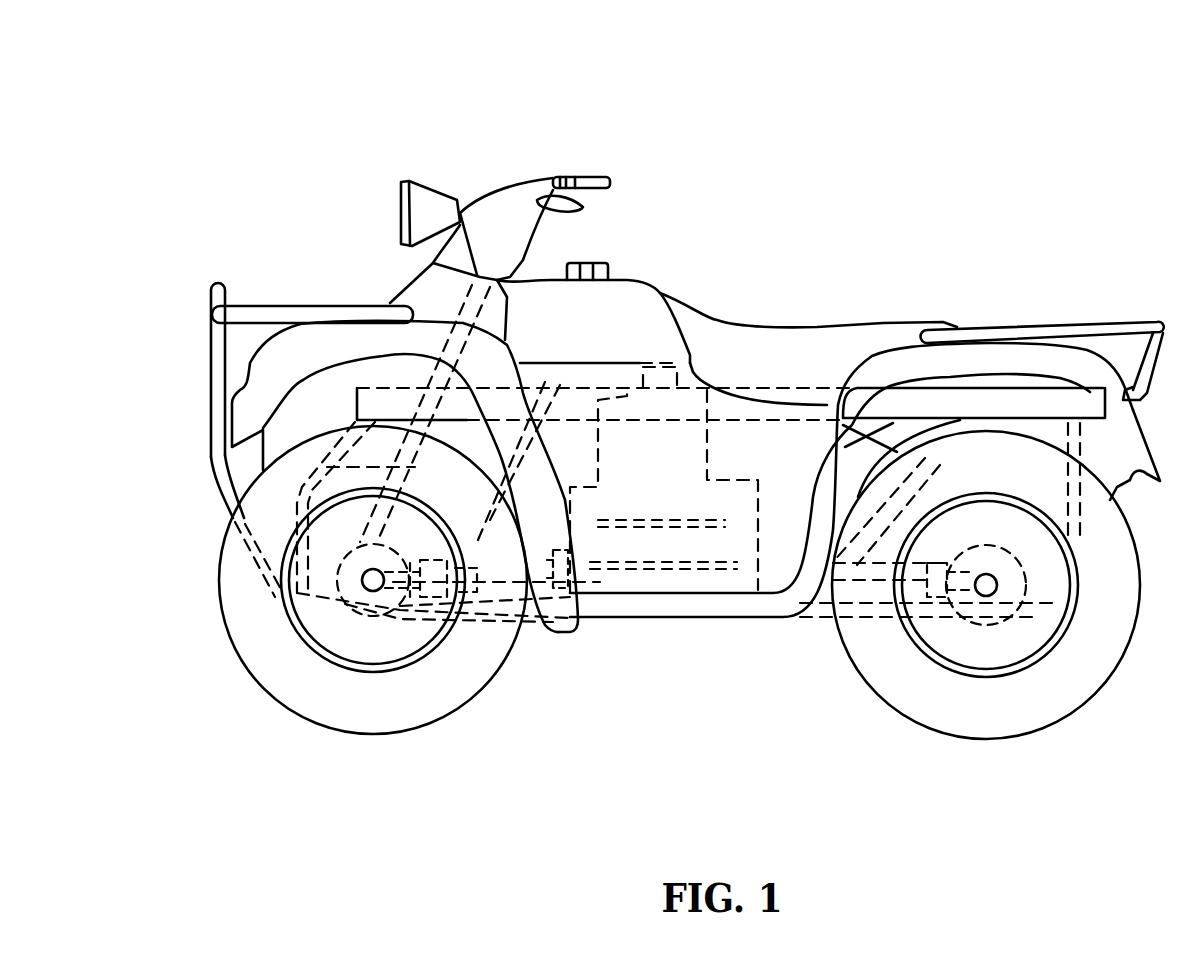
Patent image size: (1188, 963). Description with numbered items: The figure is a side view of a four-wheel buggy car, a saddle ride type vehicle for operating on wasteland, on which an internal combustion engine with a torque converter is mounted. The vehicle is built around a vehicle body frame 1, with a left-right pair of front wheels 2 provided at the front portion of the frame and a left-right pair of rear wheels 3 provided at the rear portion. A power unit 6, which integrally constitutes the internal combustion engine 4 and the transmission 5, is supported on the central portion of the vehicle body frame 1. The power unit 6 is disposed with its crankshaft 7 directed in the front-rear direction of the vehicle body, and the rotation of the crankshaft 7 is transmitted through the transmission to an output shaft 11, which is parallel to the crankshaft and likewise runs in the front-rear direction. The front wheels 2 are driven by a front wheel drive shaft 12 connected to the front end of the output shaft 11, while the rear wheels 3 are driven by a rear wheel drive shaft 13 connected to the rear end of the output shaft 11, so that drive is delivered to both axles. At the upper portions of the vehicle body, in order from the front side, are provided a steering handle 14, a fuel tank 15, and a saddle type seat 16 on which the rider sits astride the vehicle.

The vehicle body frame 1 is at (970, 407).
The front wheels 2 is at (350, 722).
The rear wheels 3 is at (1007, 715).
The internal combustion engine 4 is at (647, 433).
The transmission 5 is at (743, 490).
The power unit 6 is at (877, 56).
The crankshaft 7 is at (637, 527).
The output shaft 11 is at (700, 570).
The front wheel drive shaft 12 is at (478, 582).
The rear wheel drive shaft 13 is at (863, 573).
The steering handle 14 is at (585, 176).
The fuel tank 15 is at (635, 290).
The saddle type seat 16 is at (867, 333).